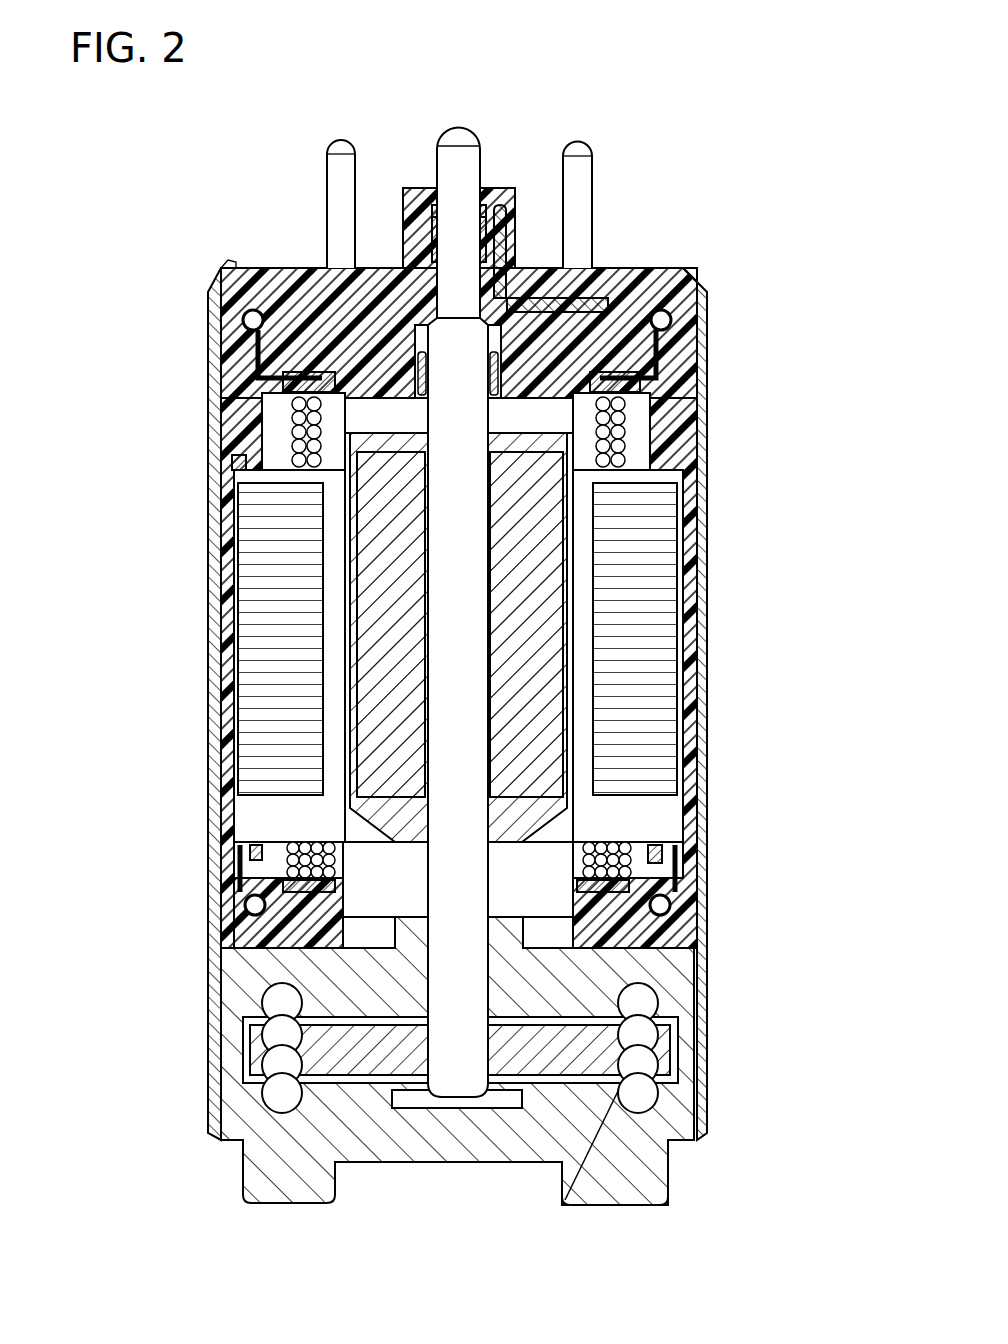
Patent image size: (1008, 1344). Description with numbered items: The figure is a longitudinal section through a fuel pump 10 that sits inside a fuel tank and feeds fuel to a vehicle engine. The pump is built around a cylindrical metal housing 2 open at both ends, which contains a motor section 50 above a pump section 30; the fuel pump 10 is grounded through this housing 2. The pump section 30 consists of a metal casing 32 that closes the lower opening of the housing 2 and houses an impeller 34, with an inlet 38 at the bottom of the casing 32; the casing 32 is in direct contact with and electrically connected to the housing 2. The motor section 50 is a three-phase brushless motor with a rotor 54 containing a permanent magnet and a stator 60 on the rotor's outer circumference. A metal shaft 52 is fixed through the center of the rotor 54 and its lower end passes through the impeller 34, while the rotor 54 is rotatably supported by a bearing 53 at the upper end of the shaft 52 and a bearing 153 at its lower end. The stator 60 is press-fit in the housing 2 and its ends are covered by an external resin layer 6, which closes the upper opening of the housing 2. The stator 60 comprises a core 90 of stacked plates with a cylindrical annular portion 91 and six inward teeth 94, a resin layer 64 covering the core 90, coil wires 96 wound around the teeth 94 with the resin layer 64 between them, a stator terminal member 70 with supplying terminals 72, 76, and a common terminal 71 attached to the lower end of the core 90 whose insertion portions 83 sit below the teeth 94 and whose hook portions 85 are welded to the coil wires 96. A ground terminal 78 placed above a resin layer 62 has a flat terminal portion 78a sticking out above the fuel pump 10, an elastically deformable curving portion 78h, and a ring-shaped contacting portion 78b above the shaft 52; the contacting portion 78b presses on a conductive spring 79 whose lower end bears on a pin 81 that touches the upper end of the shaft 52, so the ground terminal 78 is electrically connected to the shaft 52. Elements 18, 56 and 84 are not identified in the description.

The fuel pump 10 is at (630, 80).
The housing 2 is at (697, 692).
The external resin layer 6 is at (250, 285).
The upper housing assembly 18 is at (484, 488).
The pump section 30 is at (528, 1090).
The casing 32 is at (680, 990).
The impeller 34 is at (660, 1043).
The inlet 38 is at (618, 1185).
The motor section 50 is at (479, 707).
The shaft 52 is at (470, 510).
The bearing 53 is at (658, 272).
The rotor 54 is at (538, 552).
The stator frame 56 is at (692, 635).
The stator 60 is at (205, 535).
The resin layer 62 is at (640, 378).
The resin layer 64 is at (612, 420).
The stator terminal member 70 is at (517, 163).
The common terminal 71 is at (258, 936).
The supplying terminal 72 is at (575, 152).
The supplying terminal 76 is at (342, 158).
The ground terminal 78 is at (542, 173).
The terminal portion 78a is at (463, 133).
The contacting portion 78b is at (473, 212).
The curving portion 78h is at (512, 248).
The spring 79 is at (421, 232).
The pin 81 is at (420, 292).
The insertion portion 83 is at (250, 865).
The retainer 84 is at (237, 468).
The hook portion 85 is at (258, 897).
The core 90 is at (652, 730).
The annular portion 91 is at (258, 690).
The teeth 94 is at (618, 858).
The coil wires 96 is at (252, 914).
The bearing 153 is at (410, 955).